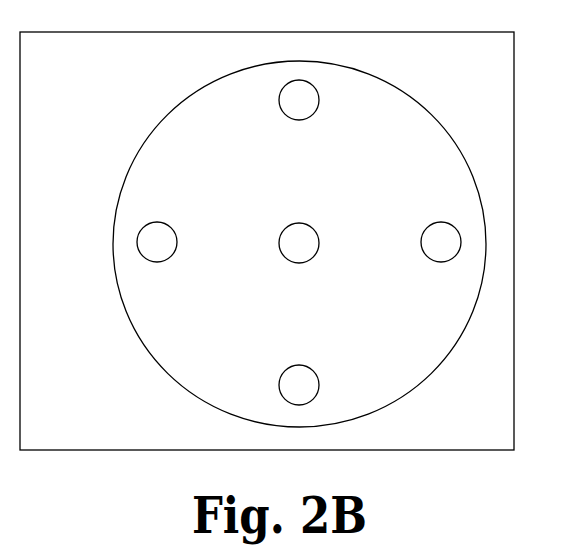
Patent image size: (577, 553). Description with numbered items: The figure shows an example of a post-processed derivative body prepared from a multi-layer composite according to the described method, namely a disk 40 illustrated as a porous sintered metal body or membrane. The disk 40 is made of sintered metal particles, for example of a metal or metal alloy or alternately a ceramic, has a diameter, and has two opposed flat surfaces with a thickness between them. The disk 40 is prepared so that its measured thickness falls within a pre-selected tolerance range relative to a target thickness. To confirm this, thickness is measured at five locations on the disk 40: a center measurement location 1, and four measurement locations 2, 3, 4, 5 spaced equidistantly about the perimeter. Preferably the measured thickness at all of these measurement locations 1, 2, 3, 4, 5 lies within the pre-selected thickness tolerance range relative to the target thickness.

The disk 40 is at (469, 163).
The measurement location 1 is at (299, 243).
The measurement location 2 is at (157, 242).
The measurement location 3 is at (299, 100).
The measurement location 4 is at (441, 242).
The measurement location 5 is at (299, 385).